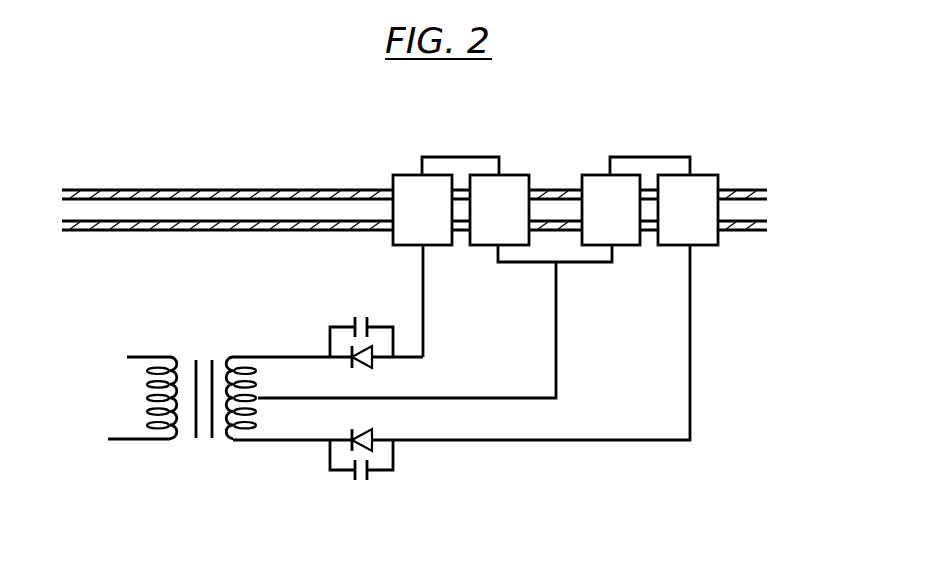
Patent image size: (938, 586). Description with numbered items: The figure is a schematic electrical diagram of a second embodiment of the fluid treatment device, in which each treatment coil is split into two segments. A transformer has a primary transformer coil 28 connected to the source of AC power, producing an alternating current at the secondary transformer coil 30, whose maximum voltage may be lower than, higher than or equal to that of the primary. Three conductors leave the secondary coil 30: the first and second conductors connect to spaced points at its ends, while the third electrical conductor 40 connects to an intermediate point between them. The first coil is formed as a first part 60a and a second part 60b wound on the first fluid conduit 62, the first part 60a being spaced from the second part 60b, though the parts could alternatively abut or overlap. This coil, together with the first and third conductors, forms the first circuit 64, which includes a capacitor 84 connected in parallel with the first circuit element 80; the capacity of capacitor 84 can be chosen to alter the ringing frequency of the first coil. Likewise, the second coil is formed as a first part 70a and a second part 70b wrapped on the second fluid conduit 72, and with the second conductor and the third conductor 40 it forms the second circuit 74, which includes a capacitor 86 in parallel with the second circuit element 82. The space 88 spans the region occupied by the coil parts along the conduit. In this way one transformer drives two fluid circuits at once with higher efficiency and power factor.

The primary transformer coil 28 is at (177, 357).
The secondary transformer coil 30 is at (232, 357).
The third electrical conductor 40 is at (556, 318).
The first part of the first coil 60a is at (398, 245).
The second part of the first coil 60b is at (497, 250).
The first fluid conduit 62 is at (193, 190).
The first circuit 64 is at (423, 317).
The first part of the second coil 70a is at (620, 248).
The second part of the second coil 70b is at (710, 248).
The second fluid conduit 72 is at (753, 190).
The second circuit 74 is at (690, 317).
The first circuit element 80 is at (372, 363).
The second circuit element 82 is at (373, 436).
The capacitor 84 is at (360, 317).
The capacitor 86 is at (360, 483).
The space 88 is at (543, 192).